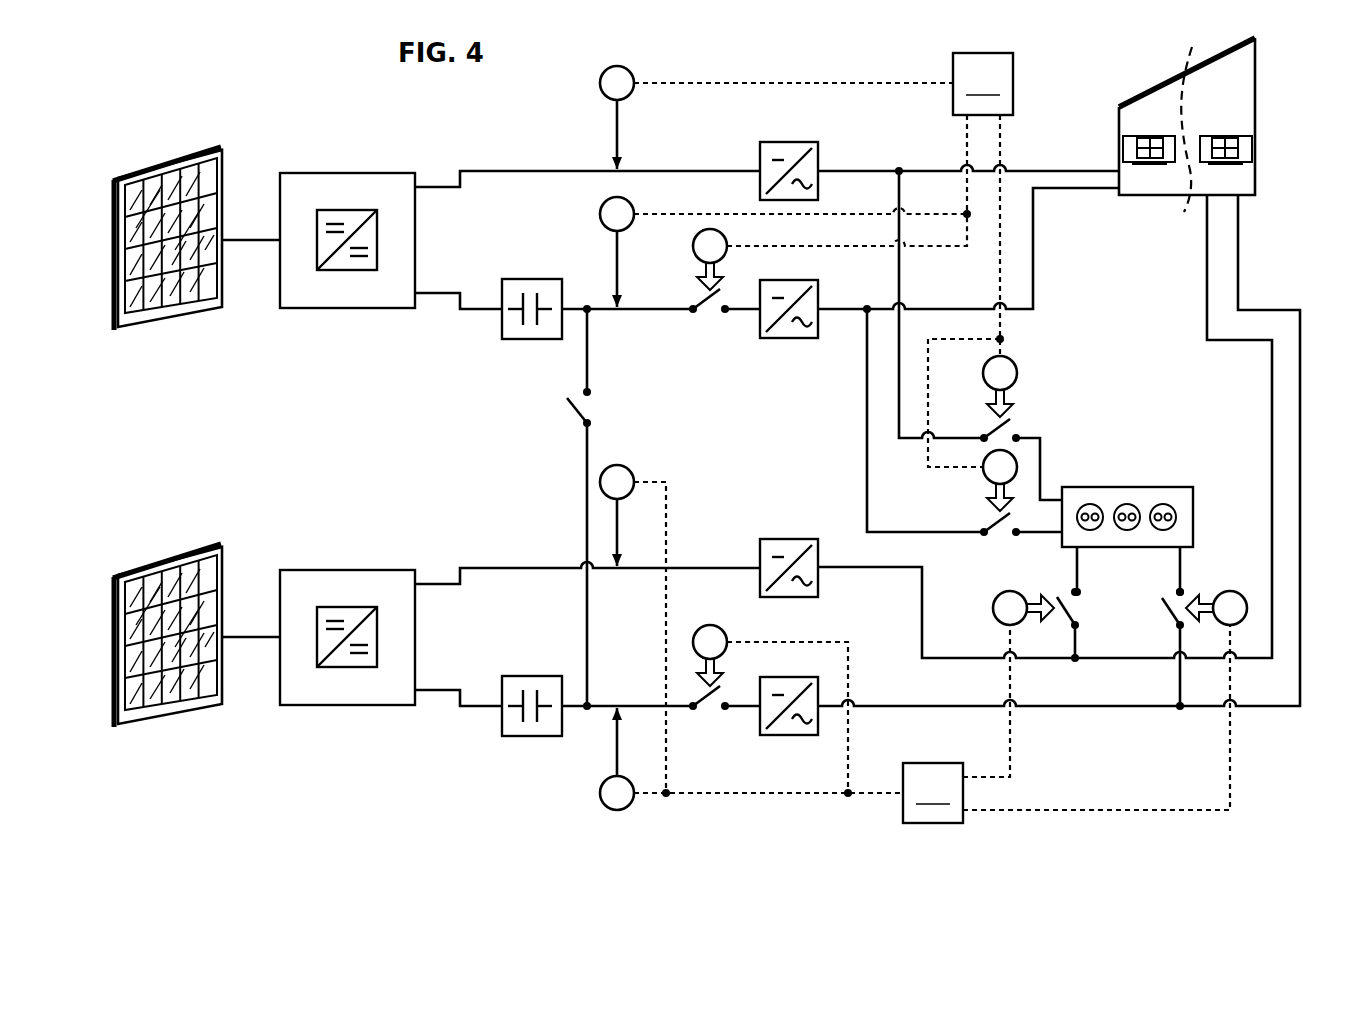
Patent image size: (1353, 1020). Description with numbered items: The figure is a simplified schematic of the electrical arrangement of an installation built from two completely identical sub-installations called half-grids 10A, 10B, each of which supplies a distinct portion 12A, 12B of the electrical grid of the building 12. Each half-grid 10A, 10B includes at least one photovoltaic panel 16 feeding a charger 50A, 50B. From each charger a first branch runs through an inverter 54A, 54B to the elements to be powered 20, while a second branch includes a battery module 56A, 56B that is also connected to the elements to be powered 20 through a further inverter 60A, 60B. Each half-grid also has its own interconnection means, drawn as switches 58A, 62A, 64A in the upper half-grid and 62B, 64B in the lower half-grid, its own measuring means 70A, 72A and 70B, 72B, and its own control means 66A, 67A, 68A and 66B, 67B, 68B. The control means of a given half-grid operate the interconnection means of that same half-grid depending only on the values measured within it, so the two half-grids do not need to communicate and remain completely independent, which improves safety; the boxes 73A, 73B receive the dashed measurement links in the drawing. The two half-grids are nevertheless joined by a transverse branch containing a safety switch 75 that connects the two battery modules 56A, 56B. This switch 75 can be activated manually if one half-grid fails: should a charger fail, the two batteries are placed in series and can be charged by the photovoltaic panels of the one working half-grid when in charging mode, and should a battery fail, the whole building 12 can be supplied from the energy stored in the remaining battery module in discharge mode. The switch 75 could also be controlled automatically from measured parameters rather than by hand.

The photovoltaic panel 16 is at (160, 163).
The first half-grid 10A is at (270, 142).
The second half-grid 10B is at (270, 539).
The building 12 is at (1187, 152).
The first portion of the electrical grid 12A is at (1123, 117).
The second portion of the electrical grid 12B is at (1243, 98).
The elements to be powered 20 is at (1128, 484).
The charger 50A is at (418, 238).
The charger 50B is at (418, 634).
The inverter 54A is at (788, 139).
The inverter 54B is at (788, 536).
The battery module 56A is at (532, 277).
The battery module 56B is at (532, 674).
The interconnection means 58A is at (706, 313).
The inverter 60A is at (790, 341).
The inverter 60B is at (790, 738).
The interconnection means 62A is at (1005, 536).
The interconnection means 62B is at (1165, 612).
The interconnection means 64A is at (1000, 428).
The interconnection means 64B is at (1063, 608).
The control means 66A is at (729, 252).
The control means 66B is at (729, 650).
The control means 67A is at (1018, 374).
The control means 67B is at (1228, 589).
The control means 68A is at (985, 478).
The control means 68B is at (993, 605).
The measuring means 70A is at (626, 66).
The measuring means 70B is at (626, 464).
The measuring means 72A is at (599, 208).
The measuring means 72B is at (626, 811).
The first controller 73A is at (983, 204).
The second controller 73B is at (1066, 724).
The safety switch 75 is at (570, 411).